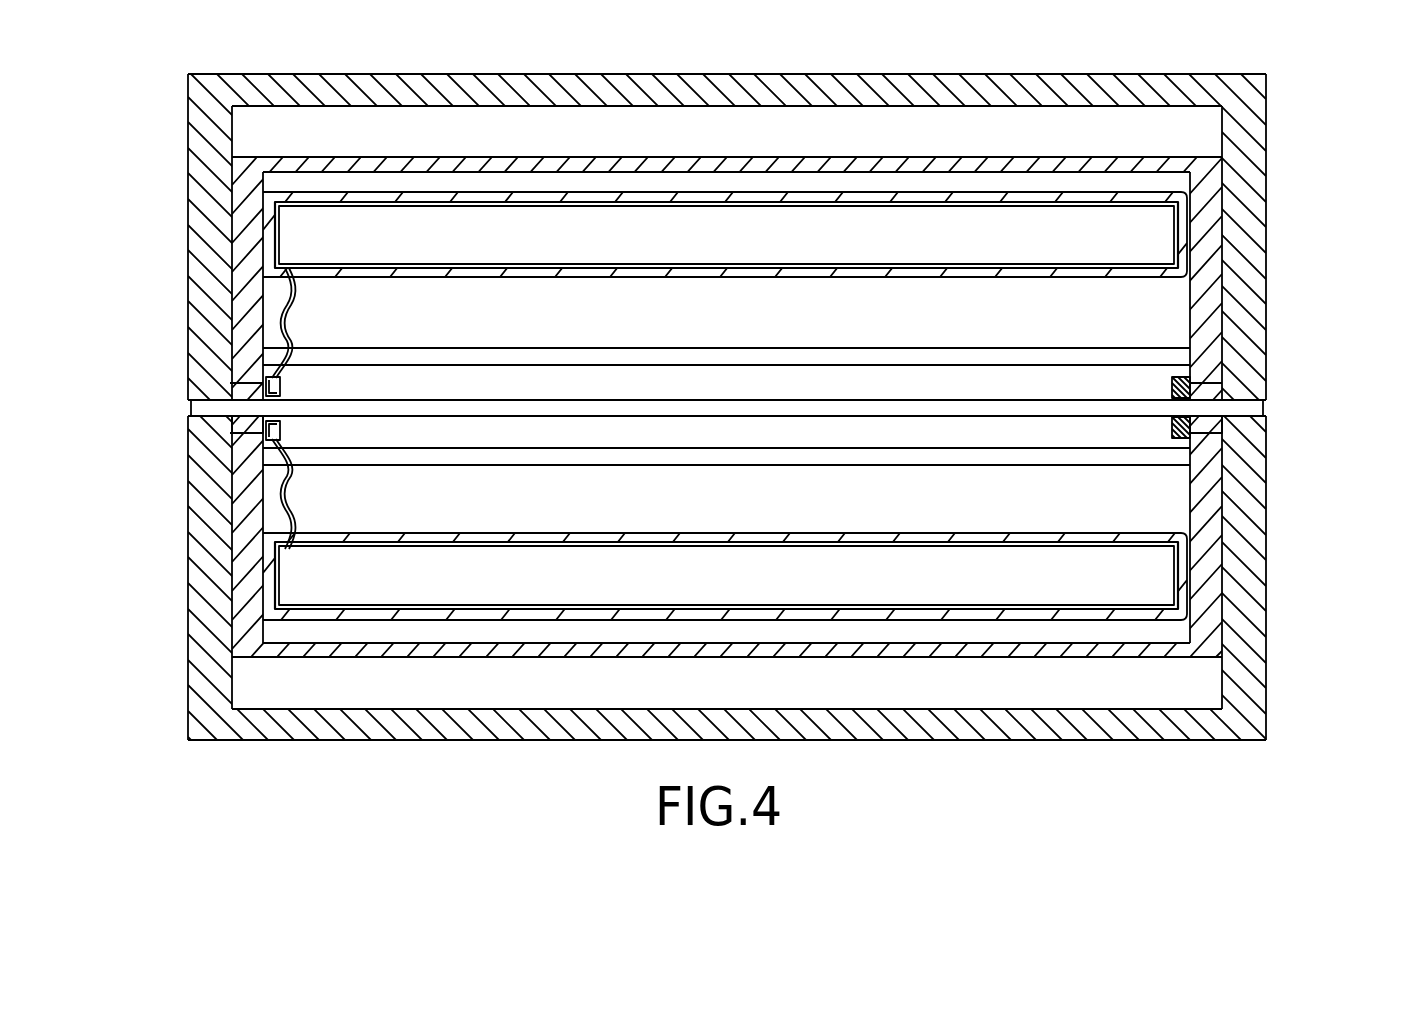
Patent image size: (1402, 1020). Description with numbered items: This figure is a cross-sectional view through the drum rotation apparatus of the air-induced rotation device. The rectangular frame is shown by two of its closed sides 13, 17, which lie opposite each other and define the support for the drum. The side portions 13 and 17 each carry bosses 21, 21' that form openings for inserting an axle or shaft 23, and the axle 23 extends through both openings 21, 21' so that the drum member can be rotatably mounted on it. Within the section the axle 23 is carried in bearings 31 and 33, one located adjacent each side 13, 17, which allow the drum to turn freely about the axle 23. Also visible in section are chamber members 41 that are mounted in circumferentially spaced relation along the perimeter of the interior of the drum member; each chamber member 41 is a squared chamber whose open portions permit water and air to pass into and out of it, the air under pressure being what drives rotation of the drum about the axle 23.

The side 13 is at (207, 272).
The side 17 is at (1250, 273).
The boss 21 is at (149, 439).
The boss 21' is at (1307, 436).
The axle 23 is at (250, 407).
The bearing 31 is at (240, 427).
The bearing 33 is at (1213, 423).
The chamber member 41 is at (1162, 233).